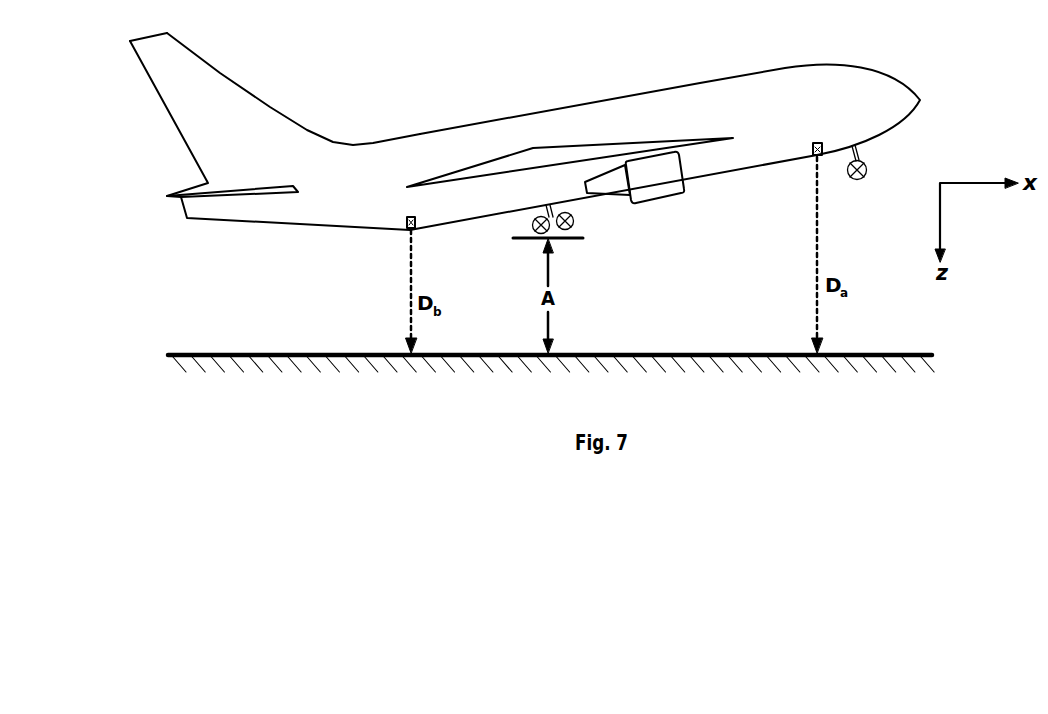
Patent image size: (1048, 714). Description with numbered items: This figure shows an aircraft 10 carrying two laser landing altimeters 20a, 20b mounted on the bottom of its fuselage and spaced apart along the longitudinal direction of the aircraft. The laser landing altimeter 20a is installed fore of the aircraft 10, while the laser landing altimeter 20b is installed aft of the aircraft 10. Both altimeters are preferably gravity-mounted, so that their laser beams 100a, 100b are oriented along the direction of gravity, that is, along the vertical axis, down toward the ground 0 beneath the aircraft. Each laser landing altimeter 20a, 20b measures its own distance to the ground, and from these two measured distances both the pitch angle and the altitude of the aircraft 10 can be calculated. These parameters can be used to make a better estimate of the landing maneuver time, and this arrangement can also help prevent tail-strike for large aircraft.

The aircraft 10 is at (525, 133).
The laser landing altimeter 20a is at (811, 147).
The laser landing altimeter 20b is at (406, 218).
The laser beam 100a is at (841, 255).
The laser beam 100b is at (387, 291).
The ground 0 is at (740, 362).